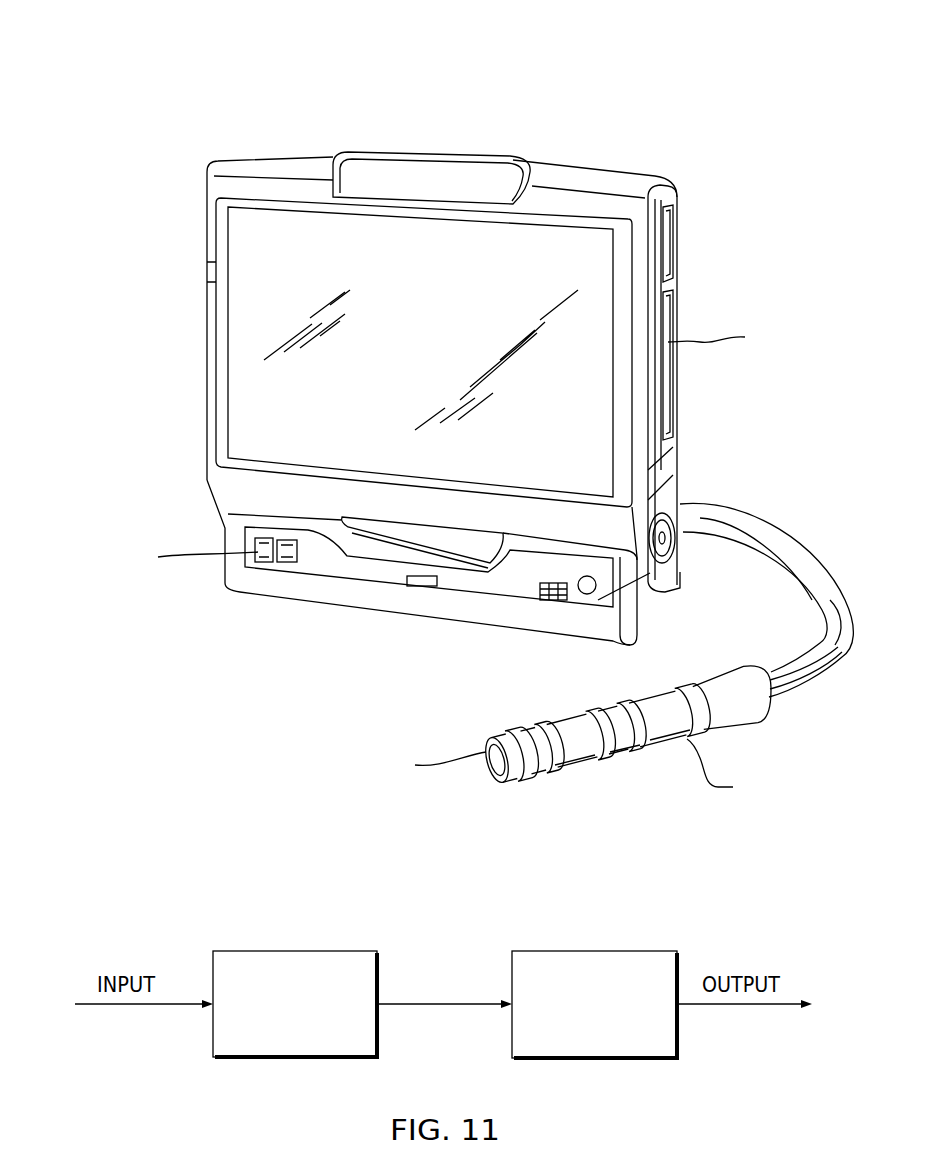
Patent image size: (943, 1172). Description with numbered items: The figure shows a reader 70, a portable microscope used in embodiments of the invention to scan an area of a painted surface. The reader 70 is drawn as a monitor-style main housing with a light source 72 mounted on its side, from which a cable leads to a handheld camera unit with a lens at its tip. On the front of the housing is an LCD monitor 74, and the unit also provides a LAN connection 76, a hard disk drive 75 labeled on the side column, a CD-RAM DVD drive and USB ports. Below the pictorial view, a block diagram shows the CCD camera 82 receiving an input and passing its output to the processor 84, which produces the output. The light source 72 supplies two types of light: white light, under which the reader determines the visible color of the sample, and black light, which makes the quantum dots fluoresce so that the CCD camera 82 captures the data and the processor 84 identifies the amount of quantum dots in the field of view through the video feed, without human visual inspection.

The reader 70 is at (650, 72).
The light source 72 is at (675, 527).
The LCD monitor 74 is at (243, 425).
The hard disk drive 75 is at (668, 252).
The LAN connection 76 is at (205, 272).
The CCD camera 82 is at (293, 951).
The processor 84 is at (591, 951).